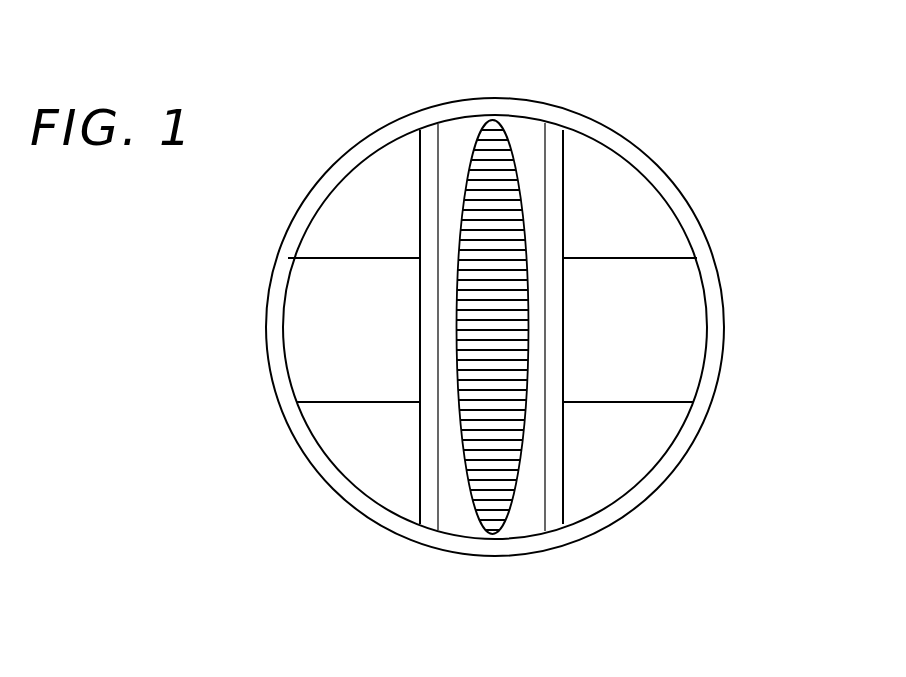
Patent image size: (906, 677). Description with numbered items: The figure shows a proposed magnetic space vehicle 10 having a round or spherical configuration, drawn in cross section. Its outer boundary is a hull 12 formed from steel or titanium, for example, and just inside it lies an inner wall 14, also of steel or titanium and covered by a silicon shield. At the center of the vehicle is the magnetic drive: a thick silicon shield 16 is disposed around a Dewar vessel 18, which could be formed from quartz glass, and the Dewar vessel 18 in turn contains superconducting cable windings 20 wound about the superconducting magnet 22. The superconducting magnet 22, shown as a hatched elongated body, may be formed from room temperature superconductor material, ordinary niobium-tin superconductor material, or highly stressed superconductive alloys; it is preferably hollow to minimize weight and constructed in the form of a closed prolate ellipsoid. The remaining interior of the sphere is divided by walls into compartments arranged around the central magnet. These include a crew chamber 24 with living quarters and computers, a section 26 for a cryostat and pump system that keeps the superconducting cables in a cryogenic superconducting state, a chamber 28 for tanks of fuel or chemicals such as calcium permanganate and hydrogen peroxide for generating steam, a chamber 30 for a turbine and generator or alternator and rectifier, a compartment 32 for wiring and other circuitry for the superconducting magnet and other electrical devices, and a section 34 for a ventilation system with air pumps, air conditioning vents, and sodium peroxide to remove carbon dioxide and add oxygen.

The magnetic space vehicle 10 is at (729, 314).
The hull 12 is at (710, 252).
The inner wall 14 is at (640, 505).
The silicon shield 16 is at (563, 373).
The Dewar vessel 18 is at (437, 355).
The superconducting cable windings 20 is at (478, 146).
The superconducting magnet 22 is at (523, 162).
The crew chamber 24 is at (678, 370).
The cryostat and pump system section 26 is at (663, 432).
The tank chamber 28 is at (356, 463).
The turbine and generator chamber 30 is at (302, 308).
The wiring compartment 32 is at (352, 218).
The ventilation system section 34 is at (615, 197).